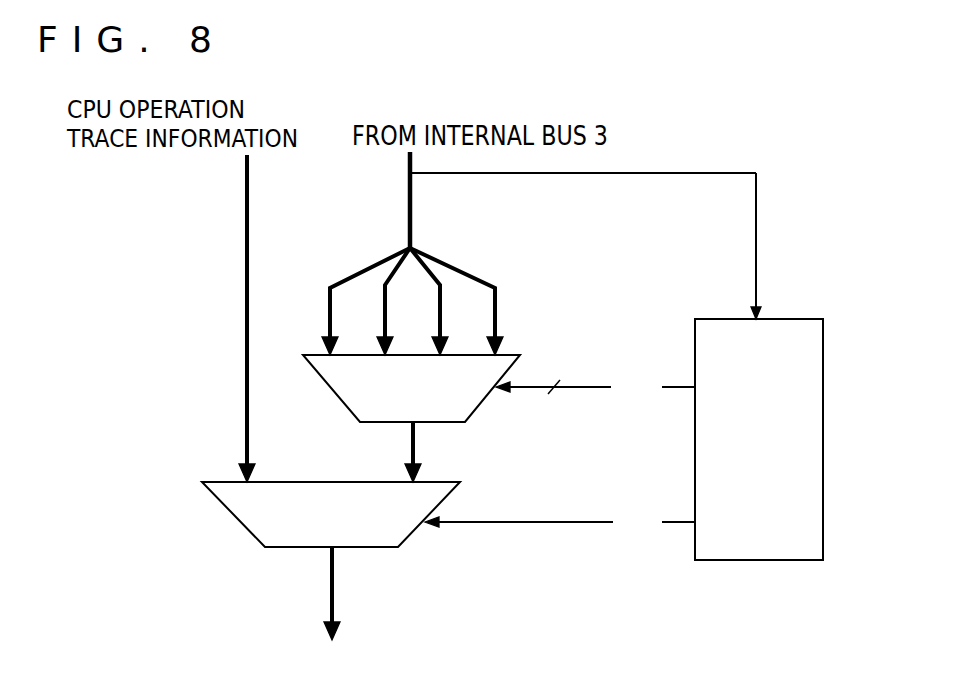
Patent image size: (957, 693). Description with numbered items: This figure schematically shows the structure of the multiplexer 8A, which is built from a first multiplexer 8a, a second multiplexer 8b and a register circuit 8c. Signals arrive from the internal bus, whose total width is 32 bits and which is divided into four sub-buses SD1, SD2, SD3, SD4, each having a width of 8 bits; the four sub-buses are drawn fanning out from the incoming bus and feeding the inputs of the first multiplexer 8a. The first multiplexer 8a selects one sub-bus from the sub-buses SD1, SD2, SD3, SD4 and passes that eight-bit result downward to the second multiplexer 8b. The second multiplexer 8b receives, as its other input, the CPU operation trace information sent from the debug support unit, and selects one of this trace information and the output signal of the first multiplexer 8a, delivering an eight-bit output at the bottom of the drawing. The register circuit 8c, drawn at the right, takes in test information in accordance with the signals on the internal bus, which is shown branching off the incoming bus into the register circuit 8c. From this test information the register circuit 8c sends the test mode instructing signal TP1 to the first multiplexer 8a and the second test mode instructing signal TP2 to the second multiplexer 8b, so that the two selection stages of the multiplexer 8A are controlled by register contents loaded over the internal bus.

The multiplexer 8A is at (197, 635).
The first multiplexer 8a is at (517, 362).
The second multiplexer 8b is at (449, 493).
The register circuit 8c is at (785, 560).
The multiplexer 8 is at (260, 283).
The total width of internal bus 32 is at (398, 201).
The sub-bus SD1 is at (350, 276).
The sub-bus SD2 is at (390, 278).
The sub-bus SD3 is at (432, 275).
The sub-bus SD4 is at (476, 276).
The test mode instructing signal TP1 is at (595, 385).
The second test mode instructing signal TP2 is at (560, 522).